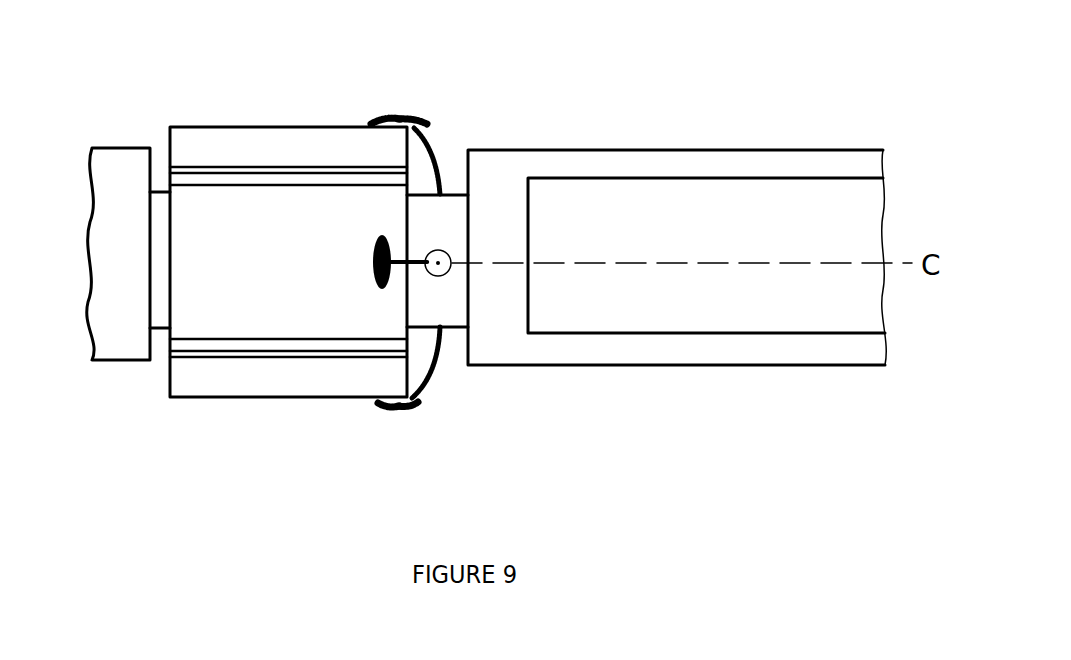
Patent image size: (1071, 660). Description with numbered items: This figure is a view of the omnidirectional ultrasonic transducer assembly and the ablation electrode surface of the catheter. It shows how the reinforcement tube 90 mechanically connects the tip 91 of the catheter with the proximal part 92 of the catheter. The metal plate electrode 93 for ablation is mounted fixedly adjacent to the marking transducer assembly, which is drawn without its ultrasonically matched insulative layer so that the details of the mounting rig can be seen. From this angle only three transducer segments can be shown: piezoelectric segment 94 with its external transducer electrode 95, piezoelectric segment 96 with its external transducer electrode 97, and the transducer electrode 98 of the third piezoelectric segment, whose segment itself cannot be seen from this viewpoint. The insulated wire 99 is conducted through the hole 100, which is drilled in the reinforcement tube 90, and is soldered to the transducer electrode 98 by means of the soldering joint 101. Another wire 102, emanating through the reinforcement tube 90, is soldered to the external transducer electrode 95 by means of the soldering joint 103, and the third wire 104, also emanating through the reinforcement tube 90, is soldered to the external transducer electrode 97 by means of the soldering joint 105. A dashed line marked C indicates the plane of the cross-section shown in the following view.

The reinforcement tube 90 is at (160, 213).
The tip 91 is at (120, 175).
The proximal part 92 is at (565, 167).
The metal plate electrode 93 is at (632, 232).
The piezoelectric segment 94 is at (255, 178).
The external transducer electrode 95 is at (205, 153).
The piezoelectric segment 96 is at (300, 346).
The external transducer electrode 97 is at (220, 372).
The transducer electrode 98 is at (215, 288).
The insulated wire 99 is at (440, 268).
The hole 100 is at (423, 267).
The soldering joint 101 is at (378, 288).
The wire 102 is at (422, 118).
The soldering joint 103 is at (373, 118).
The wire 104 is at (417, 408).
The soldering joint 105 is at (378, 408).